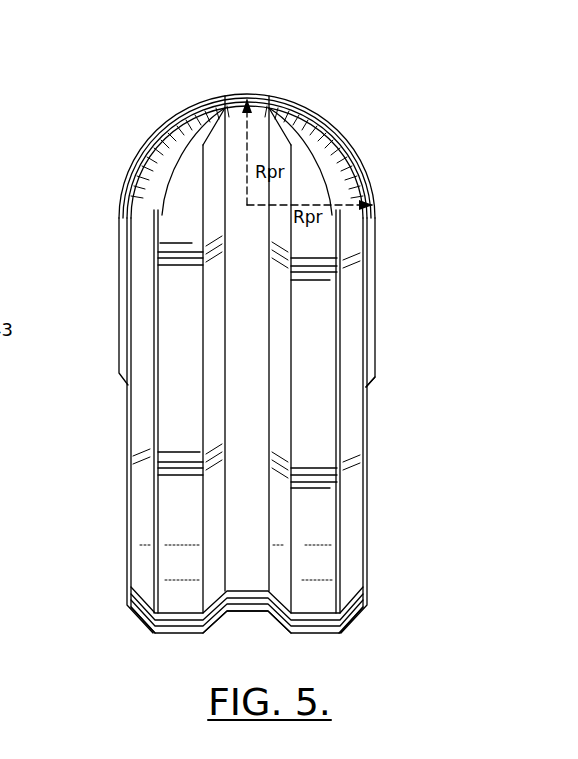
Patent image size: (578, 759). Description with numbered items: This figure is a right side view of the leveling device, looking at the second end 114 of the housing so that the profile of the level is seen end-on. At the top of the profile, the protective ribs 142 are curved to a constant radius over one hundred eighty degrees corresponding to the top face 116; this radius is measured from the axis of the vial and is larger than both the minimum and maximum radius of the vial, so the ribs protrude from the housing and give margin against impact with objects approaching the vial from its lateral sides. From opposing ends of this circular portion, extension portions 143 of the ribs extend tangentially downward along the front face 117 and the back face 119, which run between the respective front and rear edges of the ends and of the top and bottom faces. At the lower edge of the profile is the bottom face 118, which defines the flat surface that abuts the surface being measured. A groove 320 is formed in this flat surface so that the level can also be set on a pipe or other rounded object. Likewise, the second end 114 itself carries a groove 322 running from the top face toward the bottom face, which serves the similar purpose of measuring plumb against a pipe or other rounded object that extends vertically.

The top face 116 is at (226, 96).
The protective ribs 142 is at (197, 102).
The groove 322 is at (246, 336).
The extension portions 143 is at (118, 327).
The second end 114 is at (180, 362).
The front face 117 is at (130, 460).
The groove 320 is at (243, 629).
The bottom face 118 is at (317, 637).
The back face 119 is at (368, 560).